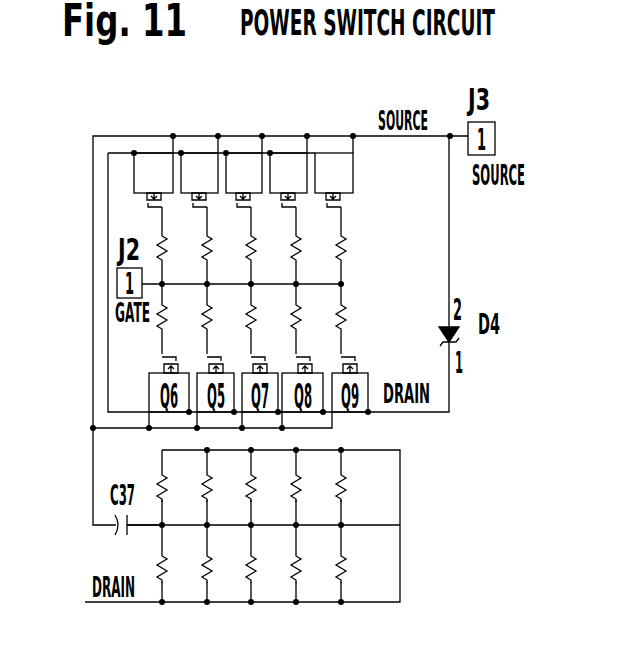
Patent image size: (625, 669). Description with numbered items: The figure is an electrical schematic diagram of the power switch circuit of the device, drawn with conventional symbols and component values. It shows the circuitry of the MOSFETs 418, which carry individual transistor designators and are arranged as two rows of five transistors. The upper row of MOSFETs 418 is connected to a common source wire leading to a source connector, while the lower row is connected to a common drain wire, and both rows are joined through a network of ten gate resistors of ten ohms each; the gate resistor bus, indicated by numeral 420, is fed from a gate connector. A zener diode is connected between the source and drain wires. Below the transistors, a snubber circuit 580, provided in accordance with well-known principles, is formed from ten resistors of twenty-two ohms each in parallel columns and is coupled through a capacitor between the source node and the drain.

The MOSFETs 418 is at (303, 193).
The gate resistor network 420 is at (327, 284).
The snubber circuit 580 is at (403, 488).